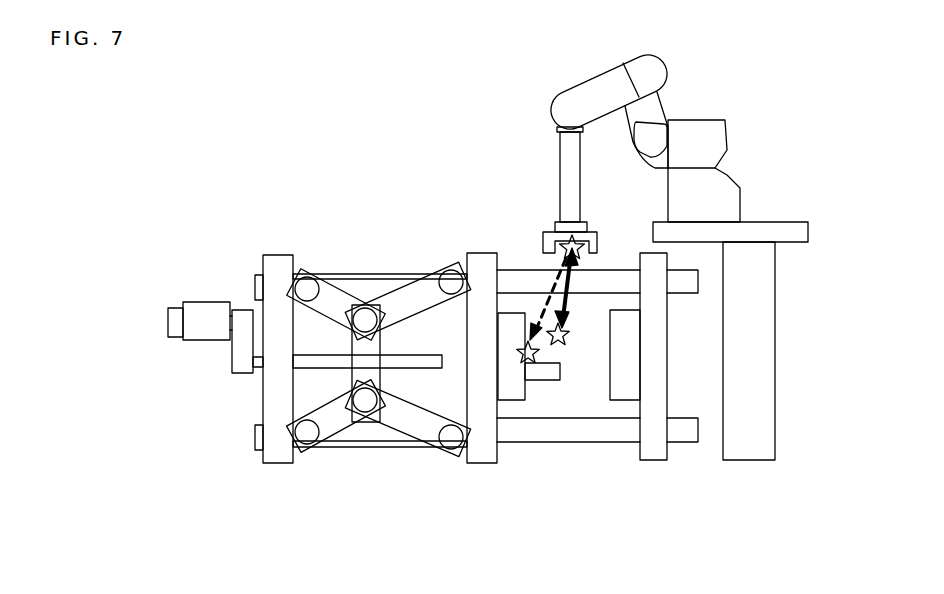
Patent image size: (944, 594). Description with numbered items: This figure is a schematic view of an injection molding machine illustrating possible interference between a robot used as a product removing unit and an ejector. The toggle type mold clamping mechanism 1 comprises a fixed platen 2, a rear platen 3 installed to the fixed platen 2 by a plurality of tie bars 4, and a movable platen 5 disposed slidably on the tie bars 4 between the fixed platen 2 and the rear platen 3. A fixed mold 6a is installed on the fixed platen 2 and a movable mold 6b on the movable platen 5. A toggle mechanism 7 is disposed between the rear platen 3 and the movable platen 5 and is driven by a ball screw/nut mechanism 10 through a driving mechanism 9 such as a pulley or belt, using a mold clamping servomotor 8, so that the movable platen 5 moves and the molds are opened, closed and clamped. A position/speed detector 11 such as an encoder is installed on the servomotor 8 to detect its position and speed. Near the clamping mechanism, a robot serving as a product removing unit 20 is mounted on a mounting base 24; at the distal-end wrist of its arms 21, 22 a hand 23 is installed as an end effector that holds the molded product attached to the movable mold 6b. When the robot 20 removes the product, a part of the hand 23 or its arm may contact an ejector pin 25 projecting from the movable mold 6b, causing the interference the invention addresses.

The mold clamping mechanism 1 is at (435, 238).
The fixed platen 2 is at (655, 455).
The rear platen 3 is at (277, 458).
The tie bars 4 is at (380, 443).
The movable platen 5 is at (478, 460).
The fixed mold 6a is at (623, 398).
The movable mold 6b is at (515, 400).
The toggle mechanism 7 is at (360, 275).
The mold clamping servomotor 8 is at (210, 308).
The driving mechanism 9 is at (240, 357).
The ball screw/nut mechanism 10 is at (310, 367).
The position/speed detector 11 is at (168, 330).
The product removing unit 20 is at (718, 100).
The arm 21 is at (598, 92).
The arm 22 is at (565, 180).
The hand 23 is at (598, 236).
The mounting base 24 is at (755, 375).
The ejector pin 25 is at (564, 345).